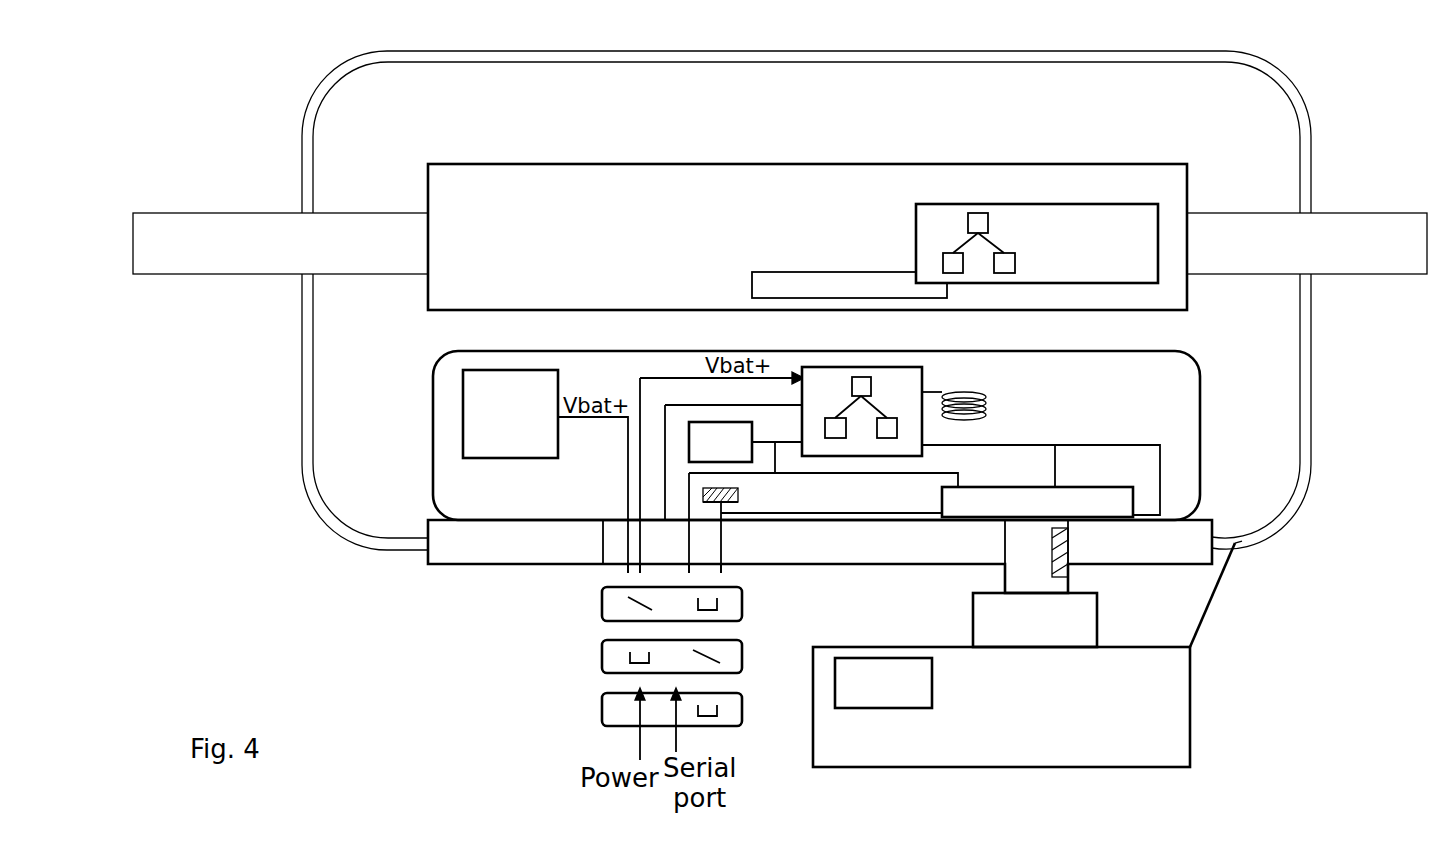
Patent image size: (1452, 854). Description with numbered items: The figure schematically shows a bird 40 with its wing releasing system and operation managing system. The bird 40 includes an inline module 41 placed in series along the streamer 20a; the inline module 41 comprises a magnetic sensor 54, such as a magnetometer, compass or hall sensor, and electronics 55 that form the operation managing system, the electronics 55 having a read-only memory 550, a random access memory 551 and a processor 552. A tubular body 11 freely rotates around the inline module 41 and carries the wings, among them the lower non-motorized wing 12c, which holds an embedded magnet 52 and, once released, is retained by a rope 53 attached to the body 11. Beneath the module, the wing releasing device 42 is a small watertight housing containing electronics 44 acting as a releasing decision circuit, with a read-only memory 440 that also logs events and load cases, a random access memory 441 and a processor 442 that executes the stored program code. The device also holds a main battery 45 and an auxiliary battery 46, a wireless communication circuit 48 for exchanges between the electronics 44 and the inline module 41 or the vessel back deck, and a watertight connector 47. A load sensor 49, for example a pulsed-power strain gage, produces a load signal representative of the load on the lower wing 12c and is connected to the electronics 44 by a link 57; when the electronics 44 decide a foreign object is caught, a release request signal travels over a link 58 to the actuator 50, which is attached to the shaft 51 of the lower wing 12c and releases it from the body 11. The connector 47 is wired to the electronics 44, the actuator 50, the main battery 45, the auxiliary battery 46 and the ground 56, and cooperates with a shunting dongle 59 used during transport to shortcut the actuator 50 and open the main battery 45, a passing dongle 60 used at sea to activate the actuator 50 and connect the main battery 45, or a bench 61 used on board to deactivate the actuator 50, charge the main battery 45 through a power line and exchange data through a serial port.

The body 11 is at (1290, 80).
The bird 40 is at (278, 126).
The streamer 20a is at (223, 274).
The inline module 41 is at (717, 163).
The magnetic sensor 54 is at (813, 272).
The electronics 55 is at (1117, 265).
The read-only memory 550 is at (943, 262).
The random access memory 551 is at (1010, 253).
The processor 552 is at (977, 214).
The wing releasing device 42 is at (432, 400).
The main battery 45 is at (458, 416).
The auxiliary battery 46 is at (717, 420).
The watertight connector 47 is at (618, 528).
The electronics 44 is at (922, 377).
The read-only memory 440 is at (837, 440).
The random access memory 441 is at (893, 420).
The processor 442 is at (857, 378).
The wireless communication circuit 48 is at (987, 403).
The link 57 is at (1055, 468).
The actuator 50 is at (1133, 502).
The ground 56 is at (740, 497).
The link 58 is at (848, 472).
The load sensor 49 is at (1068, 570).
The shaft 51 is at (1097, 617).
The embedded magnet 52 is at (895, 658).
The lower wing 12c is at (1190, 720).
The rope 53 is at (1212, 597).
The shunting dongle 59 is at (602, 600).
The passing dongle 60 is at (602, 655).
The bench 61 is at (602, 707).